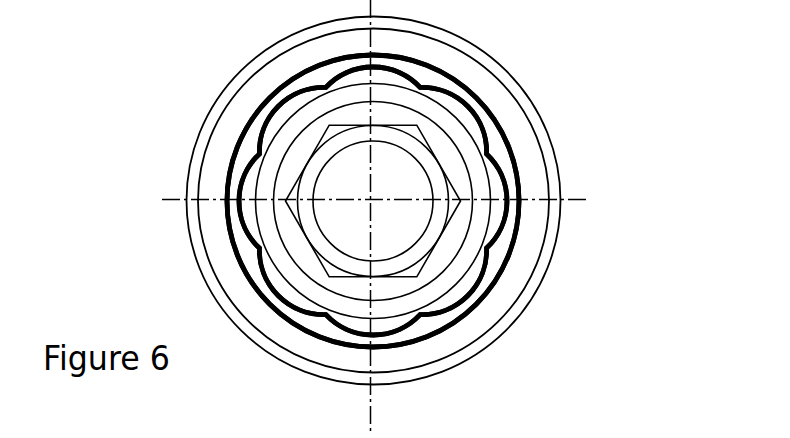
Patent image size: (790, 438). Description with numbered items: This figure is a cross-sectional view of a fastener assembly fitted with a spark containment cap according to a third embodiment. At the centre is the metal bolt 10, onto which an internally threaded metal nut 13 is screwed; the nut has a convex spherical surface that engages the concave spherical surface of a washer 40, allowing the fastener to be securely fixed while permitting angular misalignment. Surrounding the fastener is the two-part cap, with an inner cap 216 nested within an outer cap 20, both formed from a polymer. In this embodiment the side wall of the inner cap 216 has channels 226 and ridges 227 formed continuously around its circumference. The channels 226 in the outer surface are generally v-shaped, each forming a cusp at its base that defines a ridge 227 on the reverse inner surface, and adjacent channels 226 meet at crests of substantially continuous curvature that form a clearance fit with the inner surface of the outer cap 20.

The bolt 10 is at (402, 234).
The nut 13 is at (425, 280).
The outer cap 20 is at (508, 165).
The washer 40 is at (268, 270).
The inner cap 216 is at (492, 139).
The channels 226 is at (413, 99).
The ridges 227 is at (247, 153).